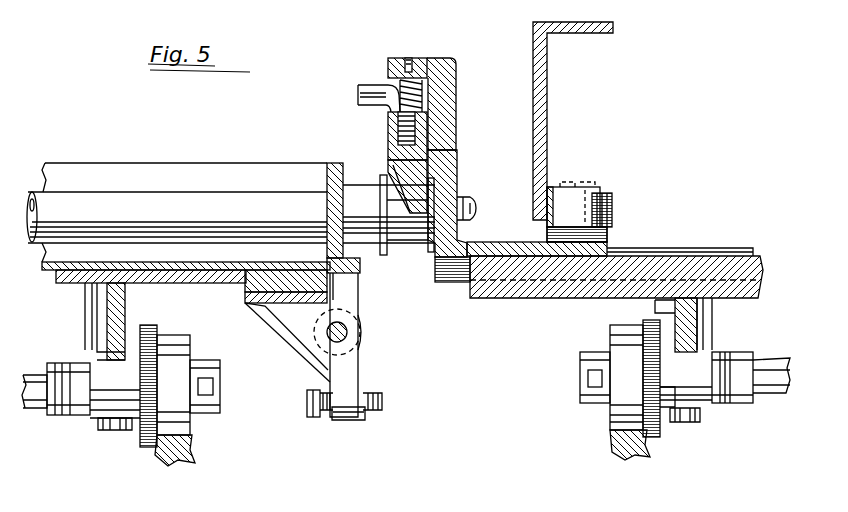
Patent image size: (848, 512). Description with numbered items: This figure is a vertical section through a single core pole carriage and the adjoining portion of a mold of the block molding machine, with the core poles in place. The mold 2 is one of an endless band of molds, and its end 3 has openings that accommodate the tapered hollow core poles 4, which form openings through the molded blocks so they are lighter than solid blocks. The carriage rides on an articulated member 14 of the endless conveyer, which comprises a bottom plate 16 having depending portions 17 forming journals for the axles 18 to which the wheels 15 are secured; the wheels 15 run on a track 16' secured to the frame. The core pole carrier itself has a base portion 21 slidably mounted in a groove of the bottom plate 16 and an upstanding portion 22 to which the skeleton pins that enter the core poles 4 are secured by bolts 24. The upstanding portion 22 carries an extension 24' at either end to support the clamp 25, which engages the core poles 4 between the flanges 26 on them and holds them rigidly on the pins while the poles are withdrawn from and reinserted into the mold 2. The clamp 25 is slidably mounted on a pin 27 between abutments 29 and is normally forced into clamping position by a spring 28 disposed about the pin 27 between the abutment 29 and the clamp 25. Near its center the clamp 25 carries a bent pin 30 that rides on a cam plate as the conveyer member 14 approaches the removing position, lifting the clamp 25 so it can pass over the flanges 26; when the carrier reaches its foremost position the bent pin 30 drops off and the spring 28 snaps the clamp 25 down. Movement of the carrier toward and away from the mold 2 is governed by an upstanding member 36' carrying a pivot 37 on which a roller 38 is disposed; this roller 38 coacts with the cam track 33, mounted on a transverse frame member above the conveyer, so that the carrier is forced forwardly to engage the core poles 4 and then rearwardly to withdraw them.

The mold 2 is at (137, 176).
The core pole 4 is at (230, 195).
The mold end 3 is at (333, 172).
The clamp 25 is at (388, 128).
The abutment 29 is at (398, 62).
The pin 27 is at (411, 60).
The spring 28 is at (418, 82).
The bent pin 30 is at (368, 85).
The extension 24' is at (470, 104).
The upstanding portion 22 is at (457, 172).
The bolt 24 is at (487, 204).
The base portion 21 is at (478, 244).
The flange 26 is at (395, 258).
The articulated member 14 is at (723, 238).
The cam track 33 is at (546, 98).
The roller 38 is at (560, 197).
The pivot 37 is at (612, 196).
The upstanding member 36' is at (613, 220).
The bottom plate 16 is at (721, 325).
The wheel 15 is at (610, 412).
The track 16' is at (634, 466).
The depending portion 17 is at (685, 365).
The axle 18 is at (775, 385).